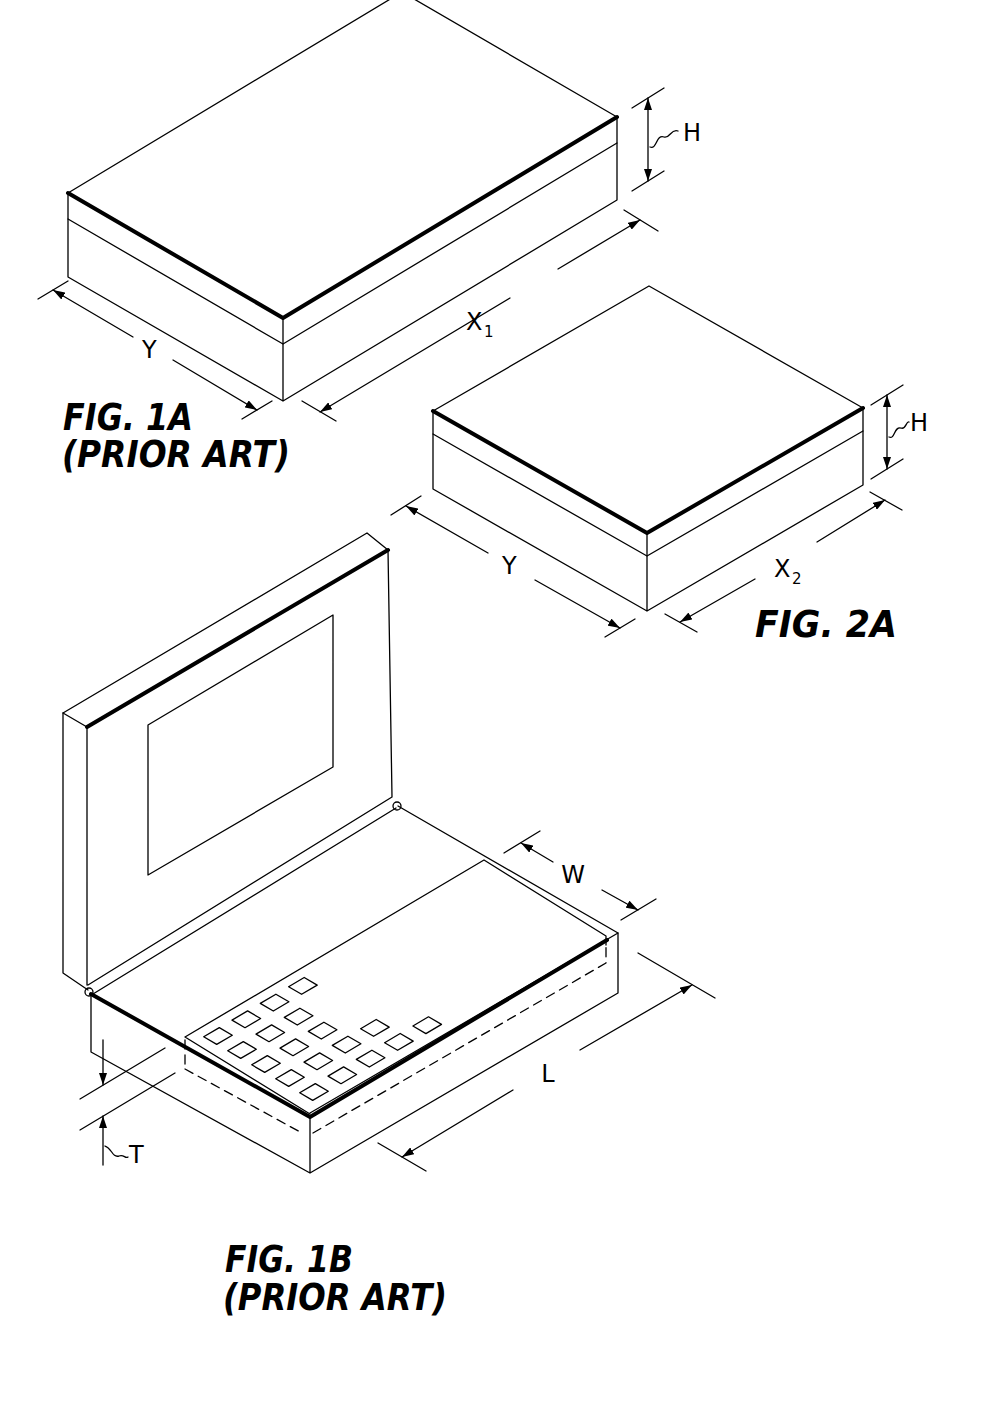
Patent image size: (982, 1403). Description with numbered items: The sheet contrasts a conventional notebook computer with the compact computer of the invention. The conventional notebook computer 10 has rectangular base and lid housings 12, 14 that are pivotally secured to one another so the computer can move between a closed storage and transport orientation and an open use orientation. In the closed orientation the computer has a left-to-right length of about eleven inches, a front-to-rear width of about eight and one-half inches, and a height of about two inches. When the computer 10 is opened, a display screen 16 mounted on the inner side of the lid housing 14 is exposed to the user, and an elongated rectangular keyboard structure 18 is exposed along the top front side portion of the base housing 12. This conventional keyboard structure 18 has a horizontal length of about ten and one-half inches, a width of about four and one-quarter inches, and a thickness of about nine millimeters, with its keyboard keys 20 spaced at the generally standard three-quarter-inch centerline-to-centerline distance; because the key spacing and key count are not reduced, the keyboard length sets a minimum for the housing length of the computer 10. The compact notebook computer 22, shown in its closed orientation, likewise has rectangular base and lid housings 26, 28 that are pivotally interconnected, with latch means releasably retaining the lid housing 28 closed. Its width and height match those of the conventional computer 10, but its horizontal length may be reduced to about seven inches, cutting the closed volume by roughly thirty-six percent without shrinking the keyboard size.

In FIG. 1A, the notebook computer 10 is at (337, 200).
In FIG. 1B, the notebook computer 10 is at (340, 853).
In FIG. 1A, the base housing 12 is at (63, 238).
In FIG. 1B, the base housing 12 is at (354, 983).
In FIG. 1A, the lid housing 14 is at (538, 62).
In FIG. 1B, the lid housing 14 is at (272, 761).
In FIG. 1B, the display screen 16 is at (244, 757).
In FIG. 1B, the keyboard structure 18 is at (384, 996).
In FIG. 1B, the keyboard keys 20 is at (243, 1018).
In FIG. 2A, the compact notebook computer 22 is at (648, 467).
In FIG. 2A, the base housing 26 is at (687, 555).
In FIG. 2A, the lid housing 28 is at (699, 361).